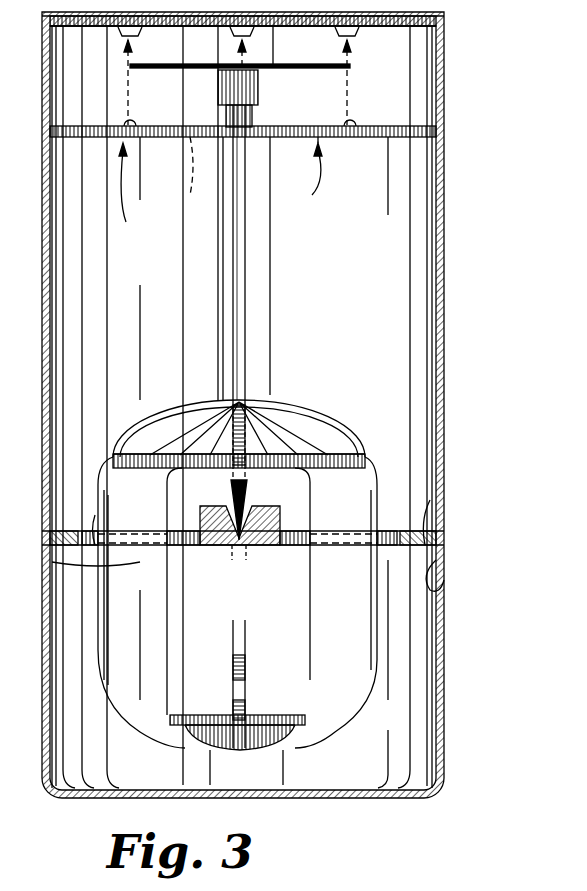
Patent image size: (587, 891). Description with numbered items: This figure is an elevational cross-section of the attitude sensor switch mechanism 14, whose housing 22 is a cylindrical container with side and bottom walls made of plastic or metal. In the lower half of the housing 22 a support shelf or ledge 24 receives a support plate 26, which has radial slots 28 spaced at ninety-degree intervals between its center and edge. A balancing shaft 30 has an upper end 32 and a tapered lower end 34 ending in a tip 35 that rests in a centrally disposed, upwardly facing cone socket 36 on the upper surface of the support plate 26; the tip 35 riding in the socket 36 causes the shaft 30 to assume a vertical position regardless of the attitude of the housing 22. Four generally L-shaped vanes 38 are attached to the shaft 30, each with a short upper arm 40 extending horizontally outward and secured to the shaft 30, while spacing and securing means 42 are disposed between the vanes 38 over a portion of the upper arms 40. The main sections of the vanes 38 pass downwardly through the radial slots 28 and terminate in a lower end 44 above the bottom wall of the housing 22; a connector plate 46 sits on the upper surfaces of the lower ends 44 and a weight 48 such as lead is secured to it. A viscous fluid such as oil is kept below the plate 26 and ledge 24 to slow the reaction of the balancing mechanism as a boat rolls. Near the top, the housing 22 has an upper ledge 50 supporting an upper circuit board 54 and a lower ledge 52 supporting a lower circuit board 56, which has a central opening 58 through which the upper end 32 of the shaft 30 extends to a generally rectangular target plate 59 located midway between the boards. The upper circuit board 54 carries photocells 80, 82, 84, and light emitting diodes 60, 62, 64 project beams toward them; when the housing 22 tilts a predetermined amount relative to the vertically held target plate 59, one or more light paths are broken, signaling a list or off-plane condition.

The sensor switch mechanism 14 is at (447, 124).
The housing 22 is at (445, 162).
The support shelf or ledge 24 is at (453, 573).
The support plate 26 is at (444, 535).
The radial slots 28 is at (98, 514).
The balancing shaft 30 is at (258, 350).
The upper end 32 is at (262, 100).
The tapered lower end 34 is at (284, 500).
The tip 35 is at (248, 548).
The cone socket 36 is at (229, 500).
The L-shaped vanes 38 is at (150, 655).
The upper arm of vanes 40 is at (195, 405).
The spacing and securing means 42 is at (105, 470).
The lower end of vanes 44 is at (165, 746).
The connector plate 46 is at (345, 715).
The weight 48 is at (183, 780).
The upper ledge 50 is at (442, 28).
The lower ledge 52 is at (410, 165).
The upper circuit board 54 is at (440, 62).
The lower circuit board 56 is at (220, 187).
The opening 58 is at (189, 193).
The target plate 59 is at (183, 138).
The light emitting diode 60 is at (355, 124).
The light emitting diode 62 is at (250, 127).
The light emitting diode 64 is at (138, 124).
The photocell 80 is at (342, 48).
The photocell 82 is at (262, 34).
The photocell 84 is at (140, 40).